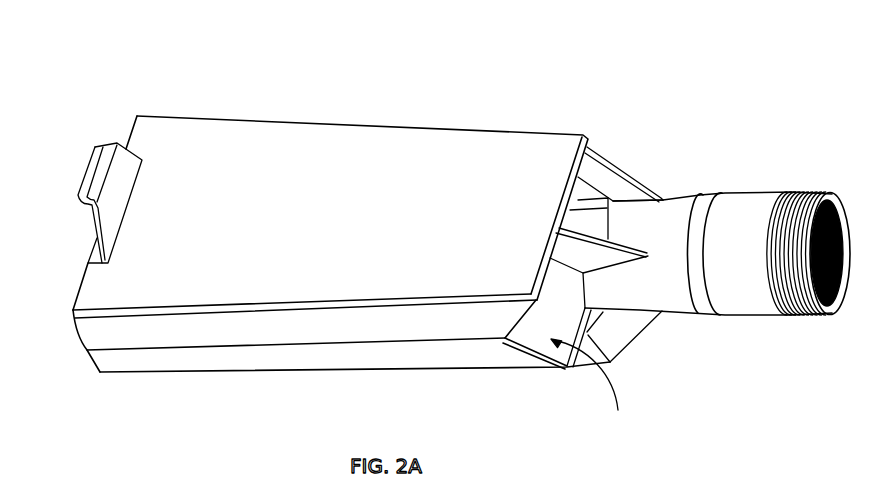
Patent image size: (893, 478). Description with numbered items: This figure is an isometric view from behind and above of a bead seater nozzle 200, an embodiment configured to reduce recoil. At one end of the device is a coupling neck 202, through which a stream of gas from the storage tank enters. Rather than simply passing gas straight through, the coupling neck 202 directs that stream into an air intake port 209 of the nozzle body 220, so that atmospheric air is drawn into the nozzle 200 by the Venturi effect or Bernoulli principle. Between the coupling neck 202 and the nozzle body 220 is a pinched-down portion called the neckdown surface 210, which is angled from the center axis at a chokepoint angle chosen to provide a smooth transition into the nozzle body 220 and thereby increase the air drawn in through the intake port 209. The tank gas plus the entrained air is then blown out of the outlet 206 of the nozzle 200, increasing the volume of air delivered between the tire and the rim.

The nozzle 200 is at (427, 232).
The coupling neck 202 is at (712, 315).
The outlet 206 is at (72, 277).
The air intake port 209 is at (597, 389).
The neckdown surface 210 is at (717, 263).
The nozzle body 220 is at (273, 365).